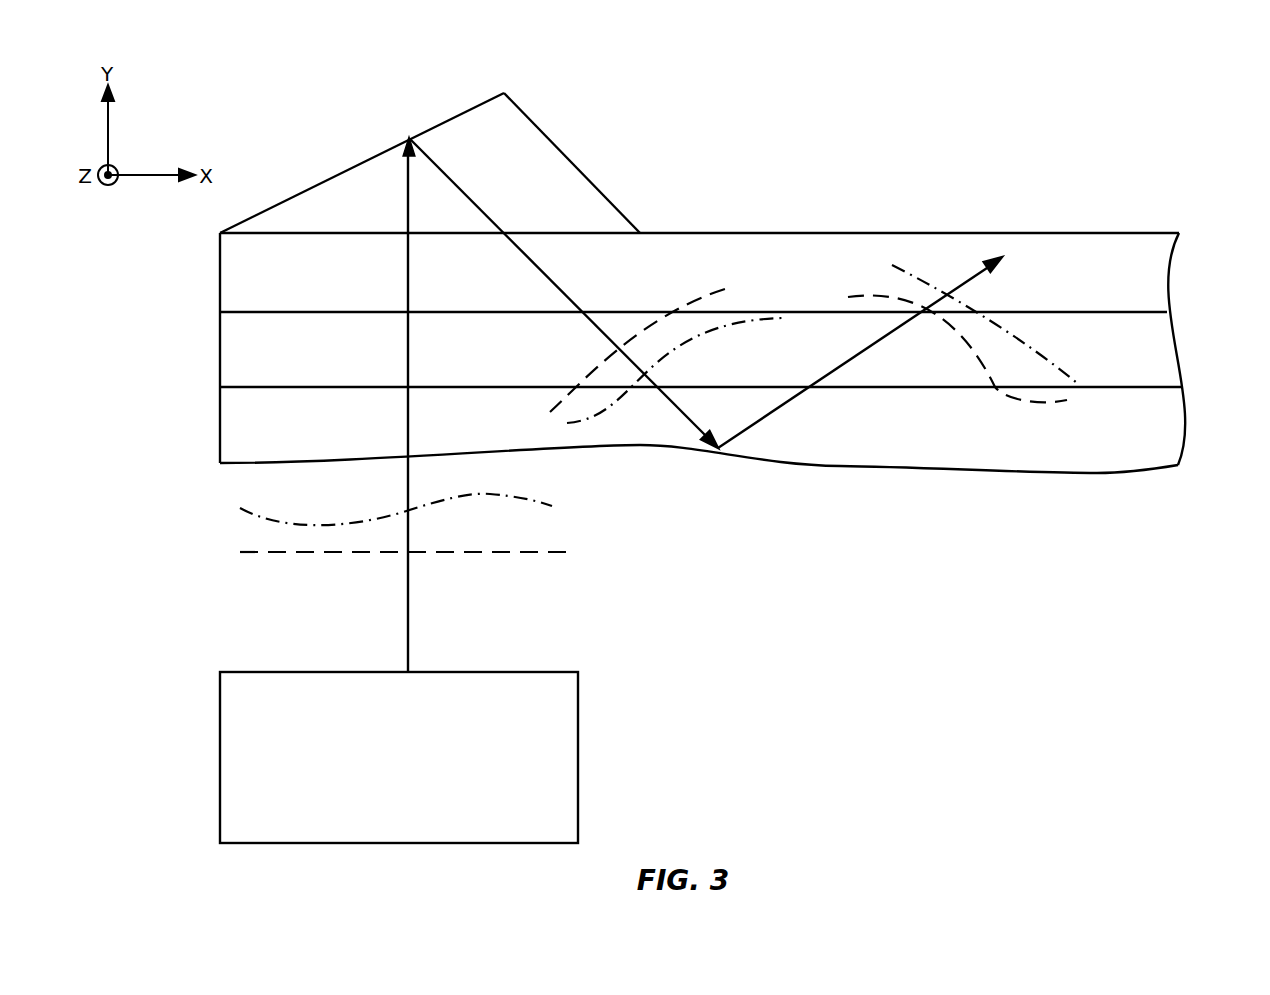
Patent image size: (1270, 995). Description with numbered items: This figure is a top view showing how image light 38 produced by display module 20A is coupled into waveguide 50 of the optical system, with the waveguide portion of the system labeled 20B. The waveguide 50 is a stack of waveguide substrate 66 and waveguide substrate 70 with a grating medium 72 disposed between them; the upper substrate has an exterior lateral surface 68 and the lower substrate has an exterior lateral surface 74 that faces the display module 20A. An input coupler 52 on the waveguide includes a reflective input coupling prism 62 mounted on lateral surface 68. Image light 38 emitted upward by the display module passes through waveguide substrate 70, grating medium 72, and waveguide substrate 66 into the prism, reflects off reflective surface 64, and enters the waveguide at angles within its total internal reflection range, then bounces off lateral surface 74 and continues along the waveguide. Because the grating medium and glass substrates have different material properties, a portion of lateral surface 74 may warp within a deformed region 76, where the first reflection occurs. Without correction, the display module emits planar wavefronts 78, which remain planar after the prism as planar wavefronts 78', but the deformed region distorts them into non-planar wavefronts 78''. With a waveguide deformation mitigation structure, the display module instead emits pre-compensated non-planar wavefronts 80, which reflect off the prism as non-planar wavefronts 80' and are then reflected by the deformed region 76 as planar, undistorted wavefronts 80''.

The display module 20A is at (568, 760).
The waveguide display assembly 20B is at (1078, 78).
The image light 38 is at (410, 607).
The waveguide 50 is at (203, 233).
The input coupler 52 is at (608, 122).
The reflective input coupling prism 62 is at (577, 183).
The reflective surface 64 is at (460, 102).
The waveguide substrate 66 is at (1103, 240).
The lateral surface 68 is at (767, 228).
The waveguide substrate 70 is at (1175, 425).
The grating medium 72 is at (1162, 350).
The lateral surface 74 is at (1099, 479).
The deformed region 76 is at (732, 474).
The planar wavefronts 78 is at (405, 593).
The planar wavefronts 78' is at (639, 325).
The non-planar wavefronts 78'' is at (957, 374).
The non-planar wavefronts 80 is at (396, 499).
The non-planar wavefronts 80' is at (674, 370).
The planar wavefronts 80'' is at (986, 324).